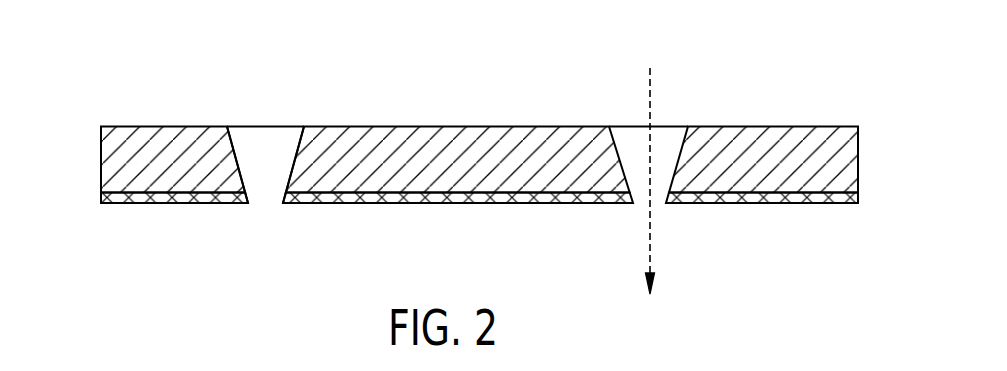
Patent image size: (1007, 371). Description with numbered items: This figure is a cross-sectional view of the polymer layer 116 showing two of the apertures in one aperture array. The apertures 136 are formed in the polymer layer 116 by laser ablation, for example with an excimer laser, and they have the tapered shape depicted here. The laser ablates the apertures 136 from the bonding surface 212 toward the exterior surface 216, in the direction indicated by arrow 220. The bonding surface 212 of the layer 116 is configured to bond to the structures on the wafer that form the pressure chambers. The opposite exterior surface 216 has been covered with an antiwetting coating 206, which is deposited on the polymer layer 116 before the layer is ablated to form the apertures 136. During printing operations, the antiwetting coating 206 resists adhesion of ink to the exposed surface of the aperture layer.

The polymer layer 116 is at (103, 154).
The antiwetting coating 206 is at (103, 198).
The apertures 136 is at (265, 135).
The bonding surface 212 is at (389, 126).
The exterior surface 216 is at (356, 194).
The arrow 220 is at (652, 85).